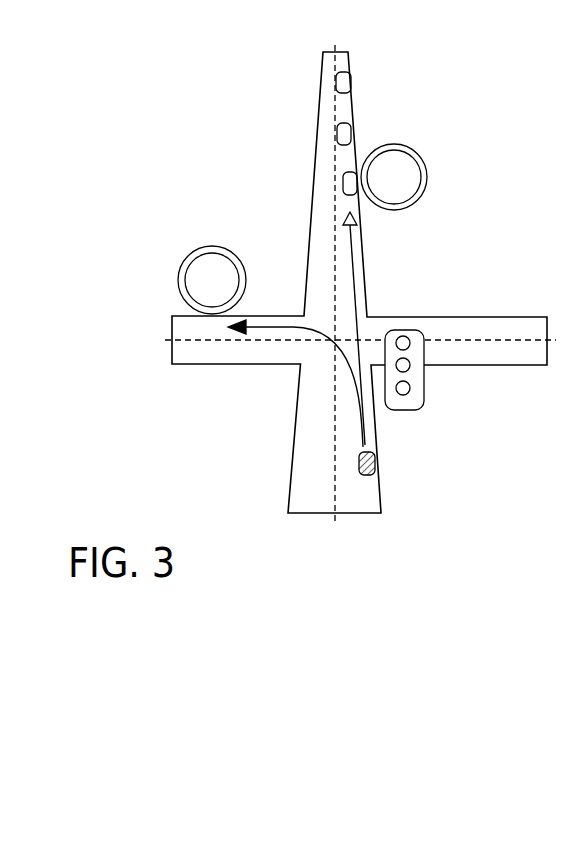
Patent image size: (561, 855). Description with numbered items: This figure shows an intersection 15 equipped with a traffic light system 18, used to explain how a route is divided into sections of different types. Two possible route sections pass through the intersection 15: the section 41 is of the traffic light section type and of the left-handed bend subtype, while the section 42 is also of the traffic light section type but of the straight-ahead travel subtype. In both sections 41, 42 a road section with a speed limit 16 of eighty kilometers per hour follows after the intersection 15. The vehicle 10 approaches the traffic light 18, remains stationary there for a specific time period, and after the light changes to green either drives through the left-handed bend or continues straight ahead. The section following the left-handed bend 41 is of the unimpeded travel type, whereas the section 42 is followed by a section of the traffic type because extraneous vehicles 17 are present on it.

The vehicle 10 is at (370, 465).
The intersection 15 is at (238, 200).
The speed limit 16 is at (178, 280).
The extraneous vehicles 17 is at (350, 184).
The traffic light system 18 is at (418, 383).
The section of the route of the traffic light section type and left-handed bend subt 41 is at (265, 327).
The section of the route of the traffic light section type and straight-ahead travel 42 is at (352, 265).